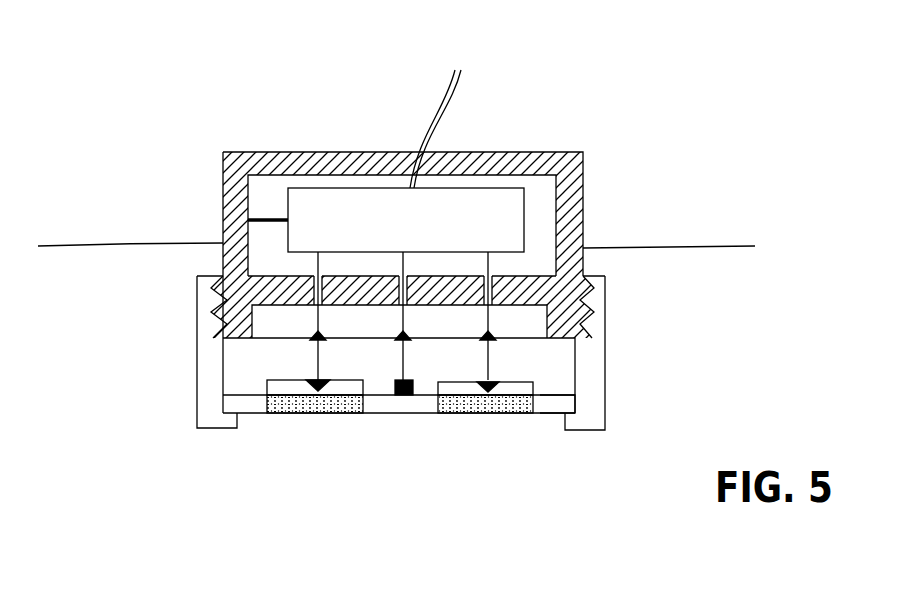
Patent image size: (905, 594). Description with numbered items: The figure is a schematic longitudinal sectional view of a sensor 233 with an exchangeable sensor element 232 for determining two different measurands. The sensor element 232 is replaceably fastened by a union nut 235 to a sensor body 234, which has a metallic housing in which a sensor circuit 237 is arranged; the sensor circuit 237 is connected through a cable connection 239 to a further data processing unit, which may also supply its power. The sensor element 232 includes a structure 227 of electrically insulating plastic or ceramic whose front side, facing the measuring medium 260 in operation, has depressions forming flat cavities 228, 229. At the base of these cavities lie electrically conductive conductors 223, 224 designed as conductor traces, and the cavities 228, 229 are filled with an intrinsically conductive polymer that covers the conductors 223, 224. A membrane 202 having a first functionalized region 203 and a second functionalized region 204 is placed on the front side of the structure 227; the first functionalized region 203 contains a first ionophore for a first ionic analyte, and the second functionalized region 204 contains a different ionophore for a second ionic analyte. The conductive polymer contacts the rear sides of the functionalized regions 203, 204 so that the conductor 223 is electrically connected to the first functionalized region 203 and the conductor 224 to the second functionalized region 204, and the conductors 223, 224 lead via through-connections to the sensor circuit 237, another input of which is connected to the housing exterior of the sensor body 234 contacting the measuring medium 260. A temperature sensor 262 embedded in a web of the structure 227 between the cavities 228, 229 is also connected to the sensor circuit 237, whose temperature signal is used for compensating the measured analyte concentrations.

The sensor 233 is at (648, 159).
The sensor body 234 is at (223, 172).
The sensor circuit 237 is at (487, 202).
The cable connection 239 is at (448, 93).
The union nut 235 is at (205, 345).
The sensor element 232 is at (570, 360).
The structure 227 is at (235, 376).
The membrane 202 is at (562, 405).
The conductor 223 is at (308, 397).
The cavity 228 is at (353, 390).
The first functionalized region 203 is at (283, 417).
The temperature sensor 262 is at (410, 397).
The conductor 224 is at (482, 413).
The cavity 229 is at (518, 383).
The second functionalized region 204 is at (457, 413).
The measuring medium 260 is at (720, 281).